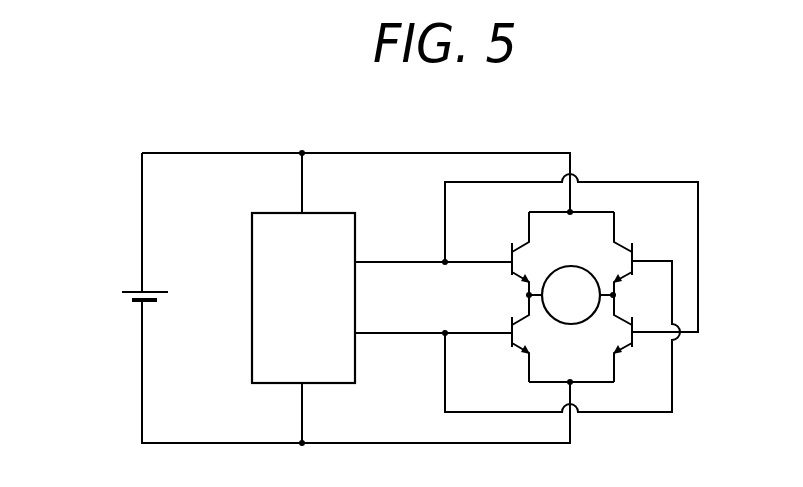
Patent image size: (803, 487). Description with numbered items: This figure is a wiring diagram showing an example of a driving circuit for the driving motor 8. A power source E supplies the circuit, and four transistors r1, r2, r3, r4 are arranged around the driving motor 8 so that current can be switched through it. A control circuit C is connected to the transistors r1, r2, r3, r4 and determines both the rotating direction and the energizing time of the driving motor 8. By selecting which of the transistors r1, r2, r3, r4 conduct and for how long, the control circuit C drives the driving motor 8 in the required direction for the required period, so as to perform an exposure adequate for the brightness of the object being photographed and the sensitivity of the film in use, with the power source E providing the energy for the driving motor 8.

The driving motor 8 is at (588, 266).
The transistor r1 is at (509, 253).
The transistor r2 is at (513, 340).
The transistor r3 is at (633, 253).
The transistor r4 is at (628, 340).
The power source E is at (130, 297).
The control circuit C is at (303, 298).